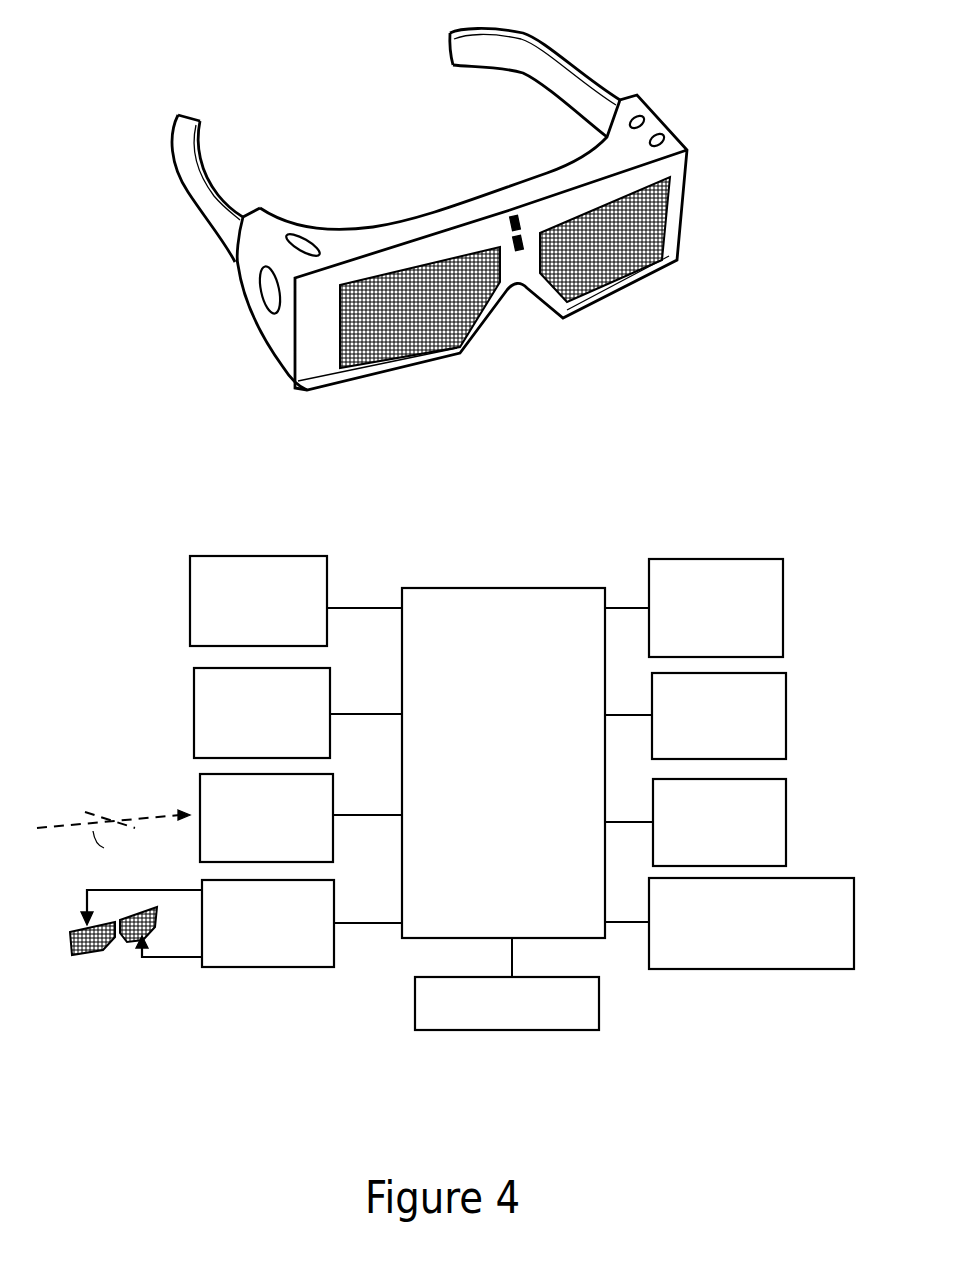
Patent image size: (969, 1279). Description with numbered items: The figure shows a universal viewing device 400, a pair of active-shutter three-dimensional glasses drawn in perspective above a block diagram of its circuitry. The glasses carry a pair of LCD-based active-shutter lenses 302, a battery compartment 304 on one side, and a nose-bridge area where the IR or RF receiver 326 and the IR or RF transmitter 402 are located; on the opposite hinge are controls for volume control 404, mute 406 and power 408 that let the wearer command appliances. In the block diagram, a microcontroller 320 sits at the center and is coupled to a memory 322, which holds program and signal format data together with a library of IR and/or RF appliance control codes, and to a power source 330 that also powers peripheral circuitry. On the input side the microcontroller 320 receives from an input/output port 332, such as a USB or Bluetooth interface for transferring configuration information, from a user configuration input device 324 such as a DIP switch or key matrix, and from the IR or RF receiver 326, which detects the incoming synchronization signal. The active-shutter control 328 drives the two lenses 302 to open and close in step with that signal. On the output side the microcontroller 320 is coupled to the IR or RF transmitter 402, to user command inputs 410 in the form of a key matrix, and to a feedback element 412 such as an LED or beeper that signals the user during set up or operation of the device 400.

The universal viewing device 400 is at (528, 386).
The active-shutter lenses 302 is at (657, 238).
The battery compartment 304 is at (267, 300).
The microcontroller 320 is at (503, 587).
The memory 322 is at (750, 970).
The user configuration input device 324 is at (193, 712).
The IR or RF receiver 326 is at (513, 207).
The active-shutter control 328 is at (325, 970).
The power source 330 is at (537, 1032).
The input/output port 332 is at (187, 601).
The IR or RF transmitter 402 is at (517, 262).
The volume control 404 is at (296, 233).
The mute 406 is at (633, 113).
The power 408 is at (657, 135).
The user command inputs 410 is at (795, 823).
The user feedback element 412 is at (787, 743).